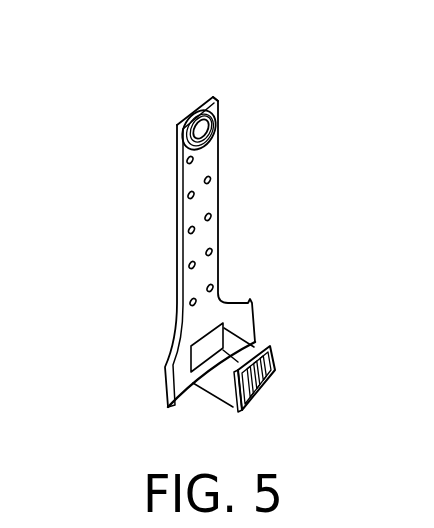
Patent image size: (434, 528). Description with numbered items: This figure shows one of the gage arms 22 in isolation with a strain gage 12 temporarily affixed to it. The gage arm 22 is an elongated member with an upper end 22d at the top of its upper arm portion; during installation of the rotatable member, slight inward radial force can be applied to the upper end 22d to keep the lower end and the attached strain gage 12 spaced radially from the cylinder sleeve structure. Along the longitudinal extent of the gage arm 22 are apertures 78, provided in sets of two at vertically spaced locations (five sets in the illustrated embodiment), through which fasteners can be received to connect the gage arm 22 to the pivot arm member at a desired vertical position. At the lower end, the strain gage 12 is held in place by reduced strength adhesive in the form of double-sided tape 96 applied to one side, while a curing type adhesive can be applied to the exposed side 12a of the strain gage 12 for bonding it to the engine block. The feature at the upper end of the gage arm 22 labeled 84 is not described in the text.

The gage arm 22 is at (150, 212).
The upper end 22d is at (212, 97).
The bushing / grommet opening 84 is at (222, 131).
The apertures 78 is at (211, 184).
The double-sided tape 96 is at (188, 343).
The strain gage 12 is at (273, 372).
The exposed side 12a is at (262, 398).